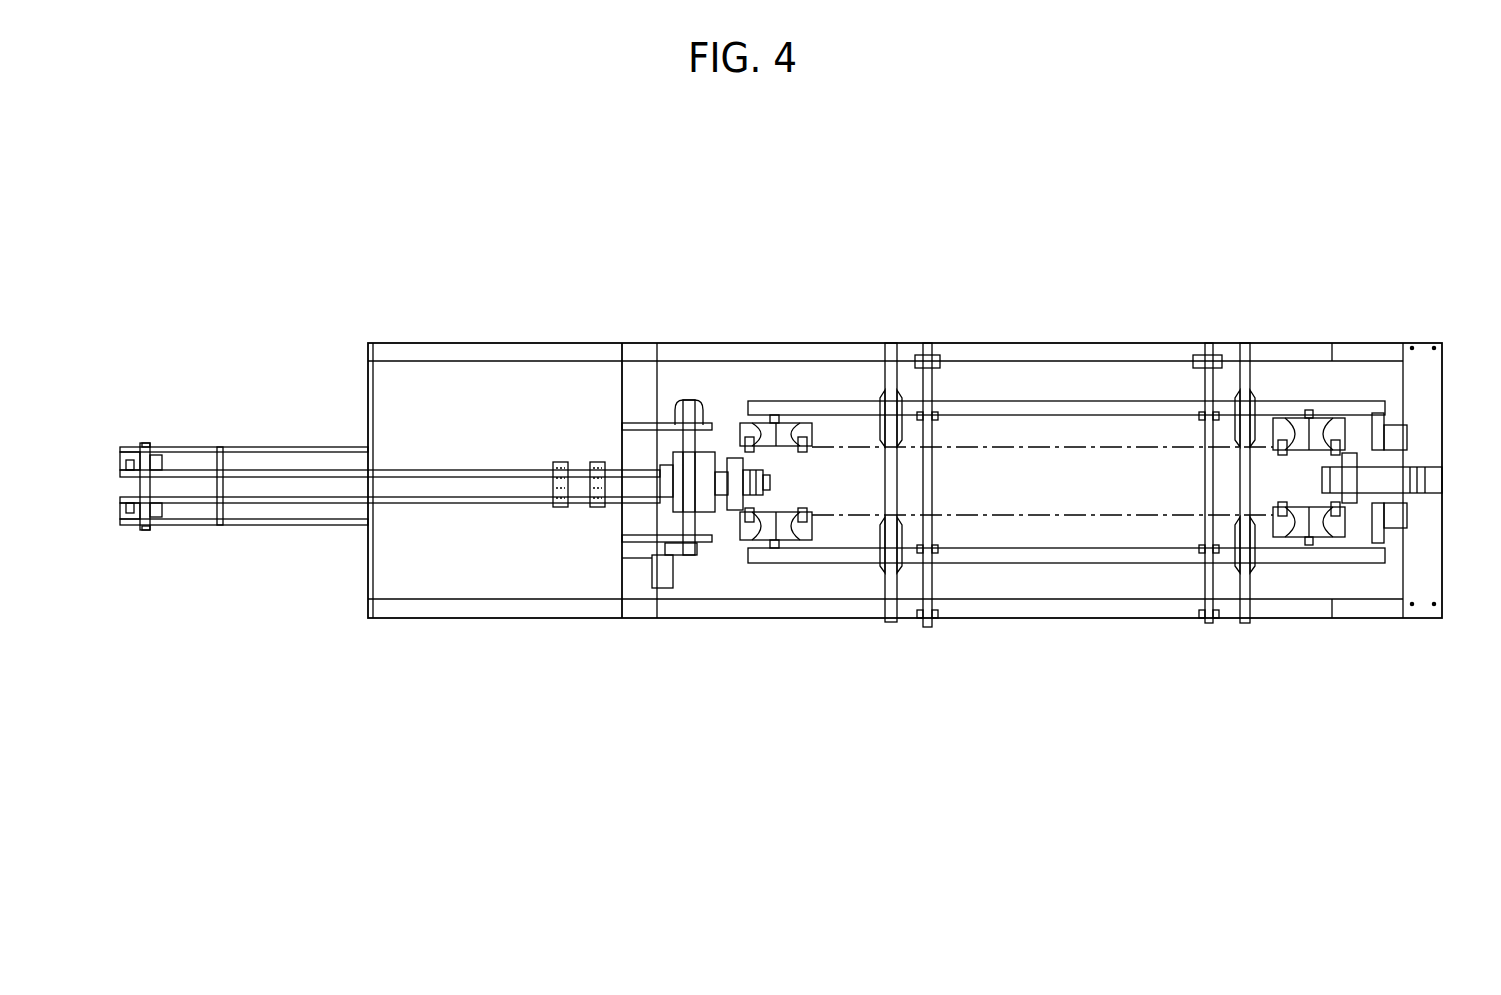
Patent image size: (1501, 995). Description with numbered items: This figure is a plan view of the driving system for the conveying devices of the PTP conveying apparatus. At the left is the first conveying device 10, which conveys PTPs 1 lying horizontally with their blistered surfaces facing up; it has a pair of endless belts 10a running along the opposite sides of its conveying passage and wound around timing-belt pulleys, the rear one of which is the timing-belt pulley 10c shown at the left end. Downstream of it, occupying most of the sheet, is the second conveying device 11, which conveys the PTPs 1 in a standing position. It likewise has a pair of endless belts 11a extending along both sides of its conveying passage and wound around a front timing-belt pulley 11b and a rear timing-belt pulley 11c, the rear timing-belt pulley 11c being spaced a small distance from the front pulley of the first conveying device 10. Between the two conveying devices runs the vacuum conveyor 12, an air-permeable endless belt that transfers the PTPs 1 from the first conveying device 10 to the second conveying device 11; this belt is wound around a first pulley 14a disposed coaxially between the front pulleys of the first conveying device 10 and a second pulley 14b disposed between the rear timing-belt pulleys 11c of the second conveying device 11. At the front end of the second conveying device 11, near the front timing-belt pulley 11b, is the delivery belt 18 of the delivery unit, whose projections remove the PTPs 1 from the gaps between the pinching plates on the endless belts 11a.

The PTP 1 is at (558, 510).
The first conveying device 10 is at (268, 540).
The endless belts 10a is at (677, 457).
The timing-belt pulley 10c is at (162, 500).
The second conveying device 11 is at (1142, 318).
The endless belts 11a is at (1060, 445).
The timing-belt pulley 11b is at (1285, 428).
The timing-belt pulley 11c is at (800, 423).
The vacuum conveyor 12 is at (722, 455).
The first pulley 14a is at (705, 482).
The second pulley 14b is at (768, 483).
The delivery belt 18 is at (1385, 487).